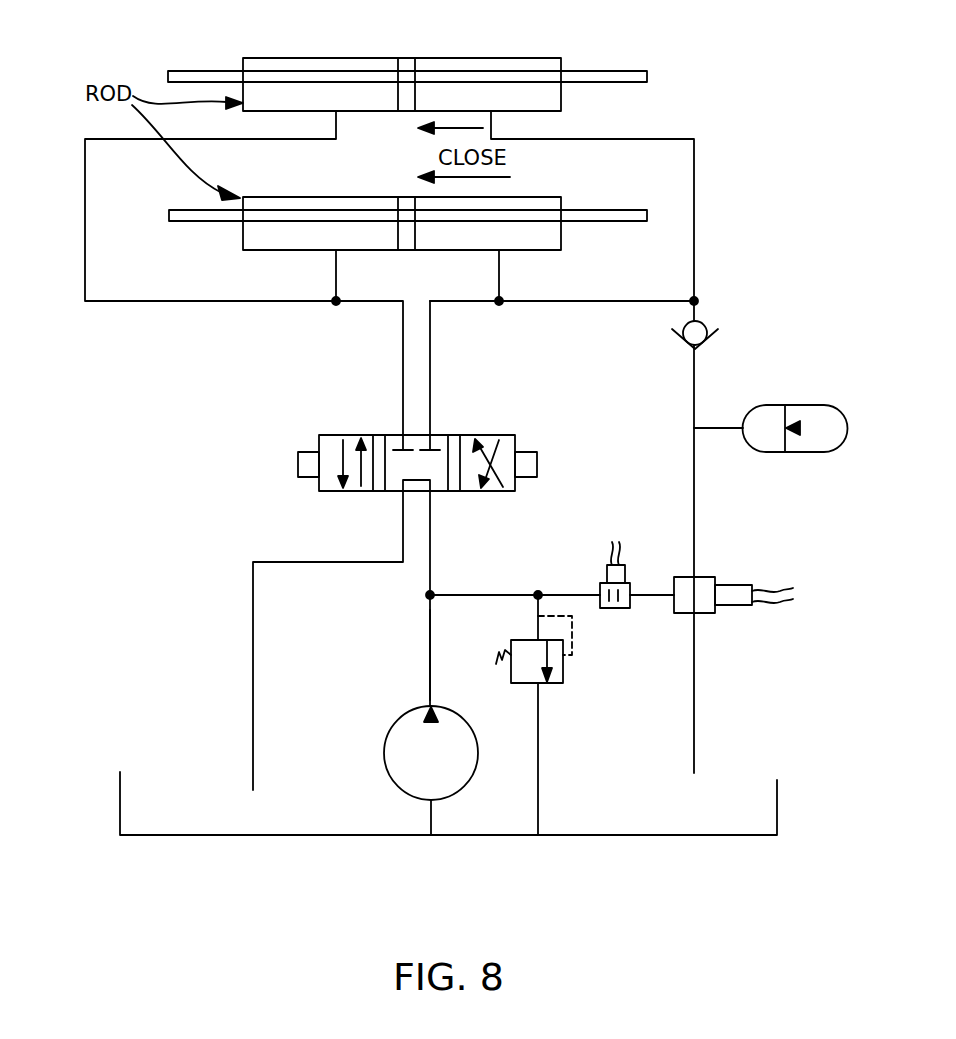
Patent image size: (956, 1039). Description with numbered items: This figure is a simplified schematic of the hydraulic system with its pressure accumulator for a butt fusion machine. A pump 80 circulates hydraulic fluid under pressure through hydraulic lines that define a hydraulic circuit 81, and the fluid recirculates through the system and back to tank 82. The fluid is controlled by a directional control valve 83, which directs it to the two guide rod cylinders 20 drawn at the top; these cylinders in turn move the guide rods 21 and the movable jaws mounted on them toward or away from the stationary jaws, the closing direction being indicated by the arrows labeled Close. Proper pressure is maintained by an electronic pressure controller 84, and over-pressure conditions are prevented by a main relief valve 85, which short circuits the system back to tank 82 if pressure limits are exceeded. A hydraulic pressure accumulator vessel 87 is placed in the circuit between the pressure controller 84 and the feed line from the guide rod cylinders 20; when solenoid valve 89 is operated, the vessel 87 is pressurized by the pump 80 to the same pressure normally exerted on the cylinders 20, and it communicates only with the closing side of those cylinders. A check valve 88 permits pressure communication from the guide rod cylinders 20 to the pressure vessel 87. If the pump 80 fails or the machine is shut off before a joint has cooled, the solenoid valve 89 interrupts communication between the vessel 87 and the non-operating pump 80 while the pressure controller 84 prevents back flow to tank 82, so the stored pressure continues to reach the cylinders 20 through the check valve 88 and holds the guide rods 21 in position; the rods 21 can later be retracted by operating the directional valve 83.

The guide rod cylinder 20 is at (543, 95).
The guide rod 21 is at (182, 72).
The pump 80 is at (388, 757).
The hydraulic circuit 81 is at (430, 653).
The tank 82 is at (583, 835).
The directional control valve 83 is at (350, 440).
The electronic pressure controller 84 is at (700, 590).
The main relief valve 85 is at (563, 667).
The hydraulic pressure accumulator vessel 87 is at (823, 430).
The check valve 88 is at (708, 330).
The solenoid valve 89 is at (610, 568).